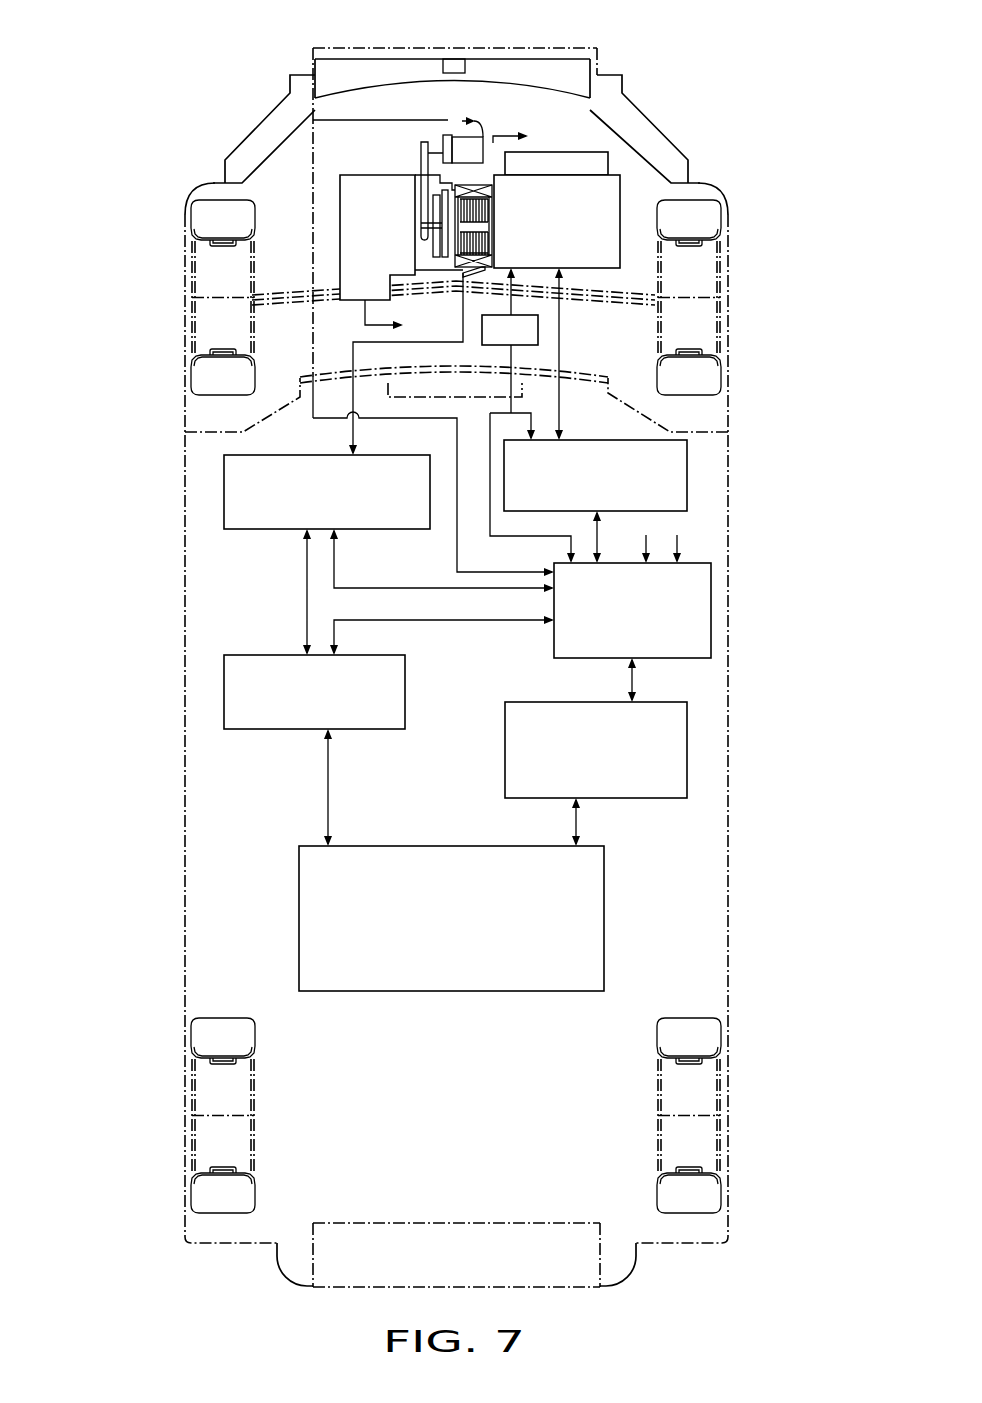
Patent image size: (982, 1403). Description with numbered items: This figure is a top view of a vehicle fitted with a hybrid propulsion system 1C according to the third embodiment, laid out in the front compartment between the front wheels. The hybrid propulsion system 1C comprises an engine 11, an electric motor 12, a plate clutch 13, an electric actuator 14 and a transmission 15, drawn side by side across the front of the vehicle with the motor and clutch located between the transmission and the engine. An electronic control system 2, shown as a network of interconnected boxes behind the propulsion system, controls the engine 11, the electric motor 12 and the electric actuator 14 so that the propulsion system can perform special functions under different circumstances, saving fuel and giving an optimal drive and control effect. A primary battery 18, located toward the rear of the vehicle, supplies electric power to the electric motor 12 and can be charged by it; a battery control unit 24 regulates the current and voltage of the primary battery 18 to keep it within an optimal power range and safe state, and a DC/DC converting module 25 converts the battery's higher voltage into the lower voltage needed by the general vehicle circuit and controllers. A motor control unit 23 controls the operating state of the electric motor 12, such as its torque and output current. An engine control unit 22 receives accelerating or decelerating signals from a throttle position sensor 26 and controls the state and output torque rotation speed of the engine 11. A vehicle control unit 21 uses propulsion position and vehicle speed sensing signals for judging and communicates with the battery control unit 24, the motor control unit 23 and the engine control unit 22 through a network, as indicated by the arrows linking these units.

The electronic control system 2 is at (708, 548).
The hybrid propulsion system 1C is at (588, 131).
The engine 11 is at (624, 190).
The electric motor 12 is at (480, 177).
The plate clutch 13 is at (432, 282).
The electric actuator 14 is at (461, 122).
The transmission 15 is at (405, 170).
The primary battery 18 is at (332, 910).
The vehicle control unit 21 is at (682, 617).
The engine control unit 22 is at (688, 477).
The motor control unit 23 is at (223, 494).
The battery control unit 24 is at (672, 767).
The DC/DC converting module 25 is at (250, 697).
The throttle position sensor 26 is at (498, 345).